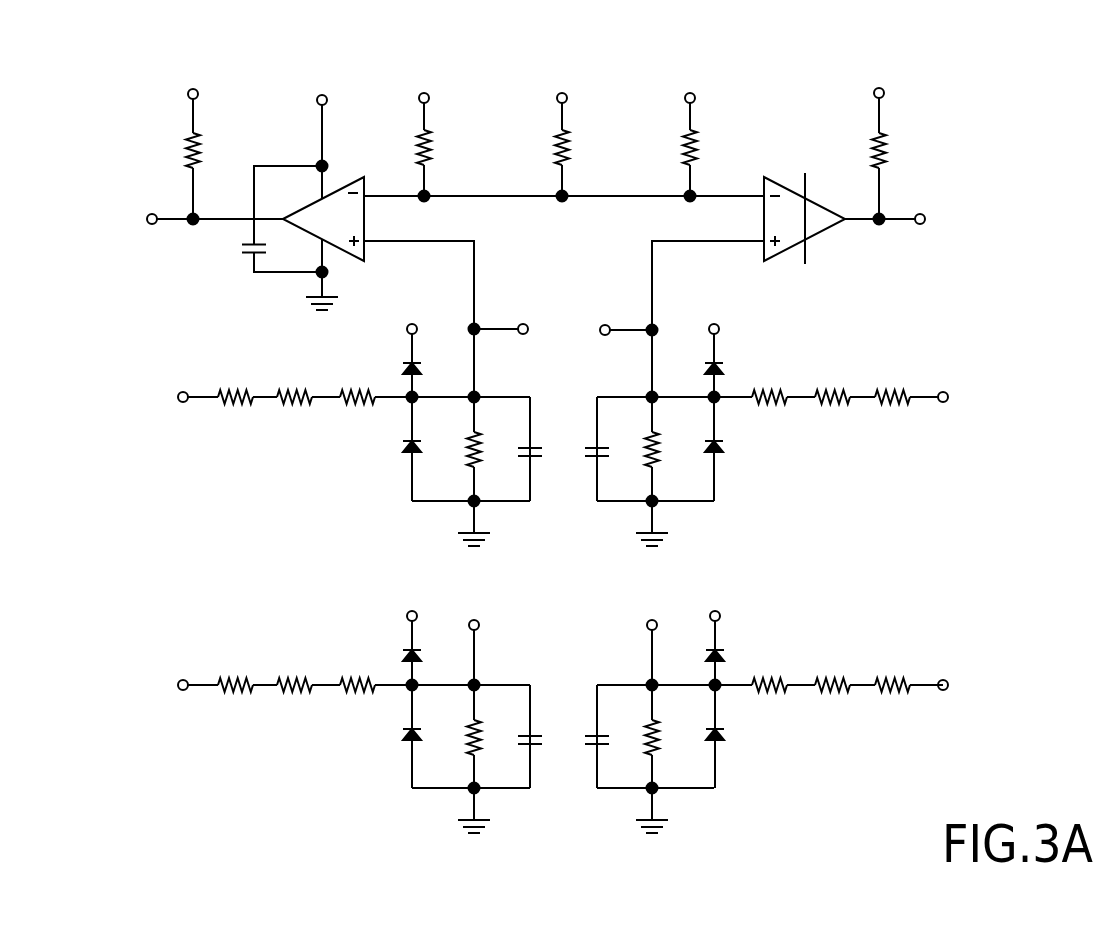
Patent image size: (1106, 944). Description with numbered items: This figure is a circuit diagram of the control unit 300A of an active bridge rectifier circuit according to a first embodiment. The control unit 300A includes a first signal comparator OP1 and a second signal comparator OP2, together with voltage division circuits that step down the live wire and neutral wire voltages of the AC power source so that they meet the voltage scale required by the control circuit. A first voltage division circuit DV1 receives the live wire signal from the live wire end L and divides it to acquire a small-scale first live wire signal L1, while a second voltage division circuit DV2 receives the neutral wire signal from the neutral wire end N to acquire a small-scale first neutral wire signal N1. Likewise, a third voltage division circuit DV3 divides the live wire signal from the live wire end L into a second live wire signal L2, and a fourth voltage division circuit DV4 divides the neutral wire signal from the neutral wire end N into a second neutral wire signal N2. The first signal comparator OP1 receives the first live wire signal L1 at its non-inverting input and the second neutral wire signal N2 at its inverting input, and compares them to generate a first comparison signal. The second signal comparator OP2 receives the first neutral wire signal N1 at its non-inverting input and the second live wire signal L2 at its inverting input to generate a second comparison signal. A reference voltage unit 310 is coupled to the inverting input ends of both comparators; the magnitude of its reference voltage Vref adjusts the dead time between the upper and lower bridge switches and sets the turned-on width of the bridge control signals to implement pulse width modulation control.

The control unit 300A is at (520, 49).
The reference voltage unit 310 is at (565, 118).
The first signal comparator OP1 is at (340, 202).
The second signal comparator OP2 is at (789, 210).
The first voltage division circuit DV1 is at (359, 492).
The second voltage division circuit DV2 is at (769, 492).
The third voltage division circuit DV3 is at (365, 707).
The fourth voltage division circuit DV4 is at (764, 707).
The live wire end L is at (182, 526).
The neutral wire end N is at (945, 526).
The first live wire signal L1 is at (499, 315).
The second live wire signal L2 is at (582, 374).
The first neutral wire signal N1 is at (628, 315).
The second neutral wire signal N2 is at (424, 133).
The reference voltage Vref is at (559, 133).